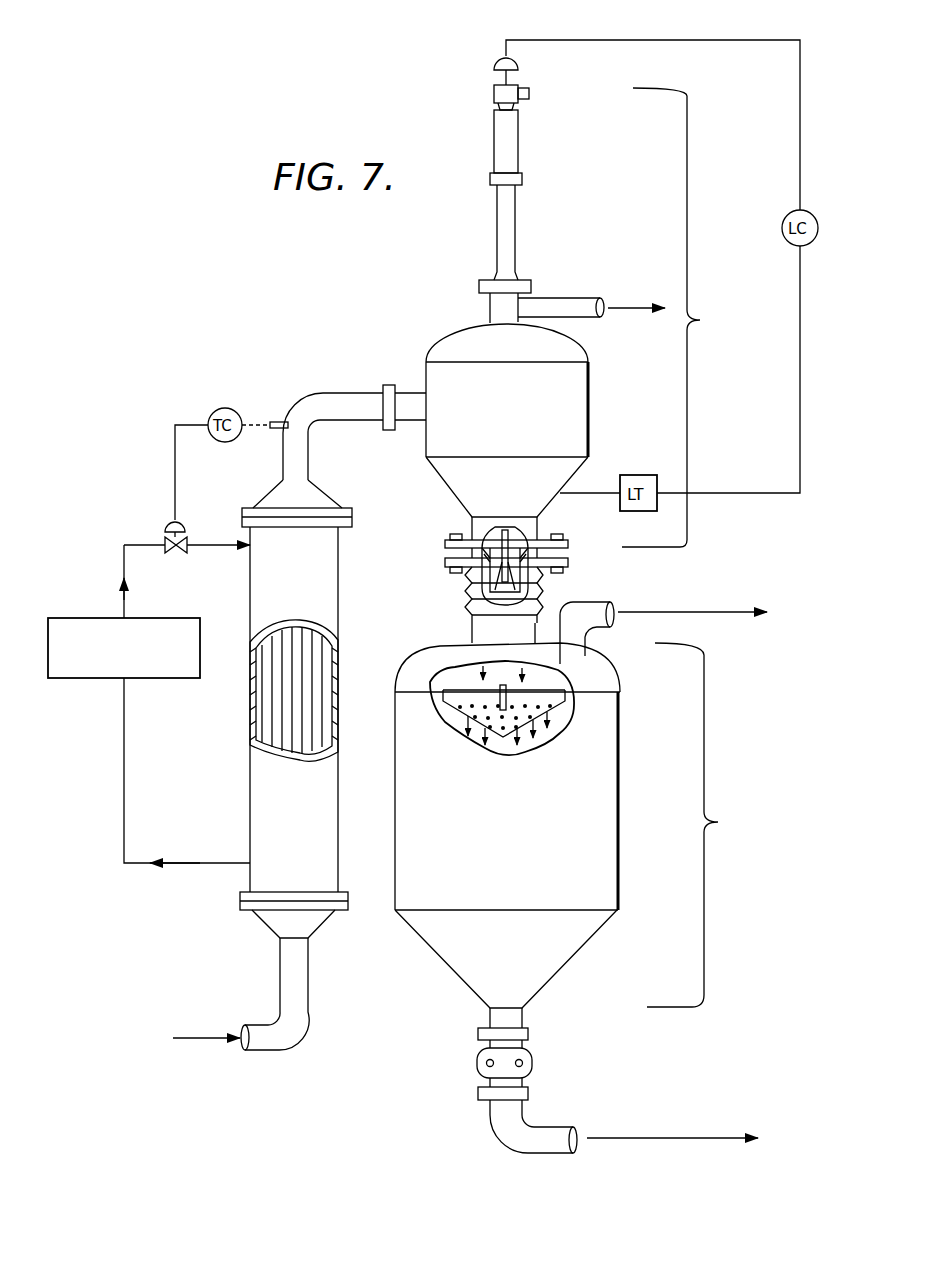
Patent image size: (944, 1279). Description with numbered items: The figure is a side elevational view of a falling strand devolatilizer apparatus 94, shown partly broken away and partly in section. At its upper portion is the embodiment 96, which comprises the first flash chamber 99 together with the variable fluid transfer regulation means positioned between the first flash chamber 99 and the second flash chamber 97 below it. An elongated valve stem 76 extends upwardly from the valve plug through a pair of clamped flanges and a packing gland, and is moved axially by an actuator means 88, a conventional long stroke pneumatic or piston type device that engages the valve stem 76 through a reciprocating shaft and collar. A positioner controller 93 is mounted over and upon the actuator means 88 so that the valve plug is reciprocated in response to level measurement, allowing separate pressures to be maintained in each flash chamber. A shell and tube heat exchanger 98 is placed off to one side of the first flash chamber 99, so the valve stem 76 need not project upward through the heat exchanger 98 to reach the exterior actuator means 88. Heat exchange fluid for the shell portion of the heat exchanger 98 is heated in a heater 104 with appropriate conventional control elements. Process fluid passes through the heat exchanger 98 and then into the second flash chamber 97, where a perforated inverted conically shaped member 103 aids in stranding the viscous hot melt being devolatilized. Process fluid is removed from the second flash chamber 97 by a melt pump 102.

The positioner controller 93 is at (504, 62).
The actuator means 88 is at (494, 94).
The falling strand devolatilizer apparatus 94 is at (412, 357).
The first flash chamber 99 is at (570, 405).
The first flash chamber and variable fluid transfer regulation means embodiment 96 is at (683, 317).
The valve stem 76 is at (503, 536).
The shell and tube heat exchanger 98 is at (253, 590).
The heater 104 is at (124, 648).
The perforated inverted conically shaped member 103 is at (460, 718).
The second flash chamber 97 is at (704, 825).
The melt pump 102 is at (480, 1062).